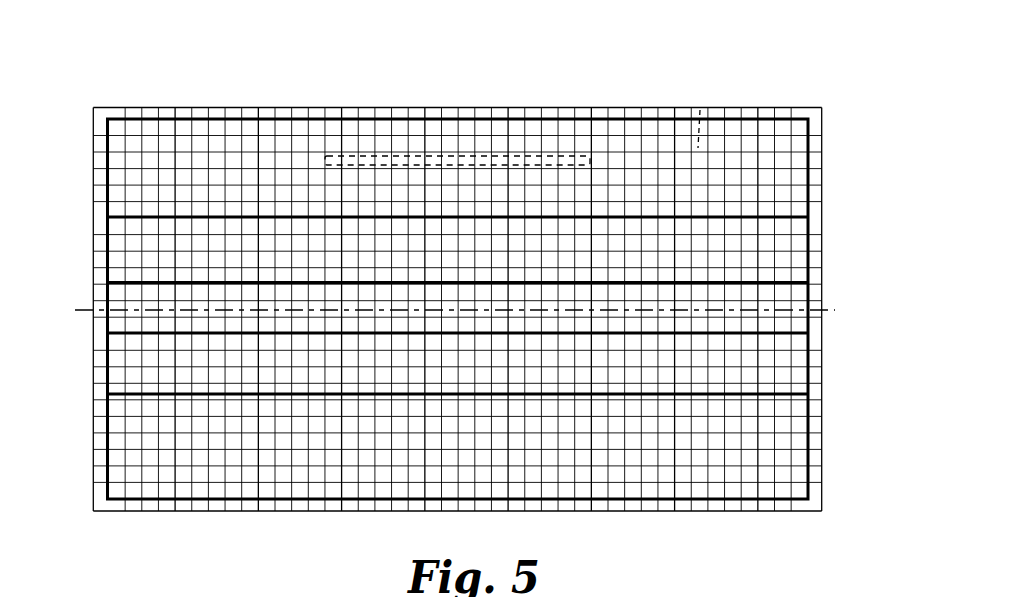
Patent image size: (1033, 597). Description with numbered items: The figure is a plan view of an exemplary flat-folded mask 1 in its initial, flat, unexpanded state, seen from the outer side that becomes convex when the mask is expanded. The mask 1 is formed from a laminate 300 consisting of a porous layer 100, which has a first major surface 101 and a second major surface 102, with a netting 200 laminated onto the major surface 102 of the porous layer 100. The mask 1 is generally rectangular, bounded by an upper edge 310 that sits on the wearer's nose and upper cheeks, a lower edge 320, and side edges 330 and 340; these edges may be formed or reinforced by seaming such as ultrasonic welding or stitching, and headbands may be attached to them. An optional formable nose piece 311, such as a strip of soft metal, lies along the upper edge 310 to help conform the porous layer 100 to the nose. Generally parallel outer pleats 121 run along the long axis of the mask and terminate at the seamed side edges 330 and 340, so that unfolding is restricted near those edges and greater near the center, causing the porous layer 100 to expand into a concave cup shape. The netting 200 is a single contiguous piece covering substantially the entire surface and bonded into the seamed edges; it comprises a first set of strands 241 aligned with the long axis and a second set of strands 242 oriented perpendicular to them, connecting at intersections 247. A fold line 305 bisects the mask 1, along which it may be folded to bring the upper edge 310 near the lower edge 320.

The flat-folded mask 1 is at (770, 54).
The porous layer 100 is at (148, 128).
The first major surface 101 is at (700, 110).
The second major surface 102 is at (632, 130).
The outer pleats 121 is at (797, 280).
The netting 200 is at (358, 144).
The first set of strands 241 is at (334, 485).
The second set of strands 242 is at (125, 475).
The intersections 247 is at (175, 468).
The laminate 300 is at (125, 447).
The fold line 305 is at (82, 308).
The upper edge 310 is at (236, 113).
The formable nose piece 311 is at (531, 155).
The lower edge 320 is at (217, 505).
The side edge 330 is at (102, 164).
The side edge 340 is at (813, 467).